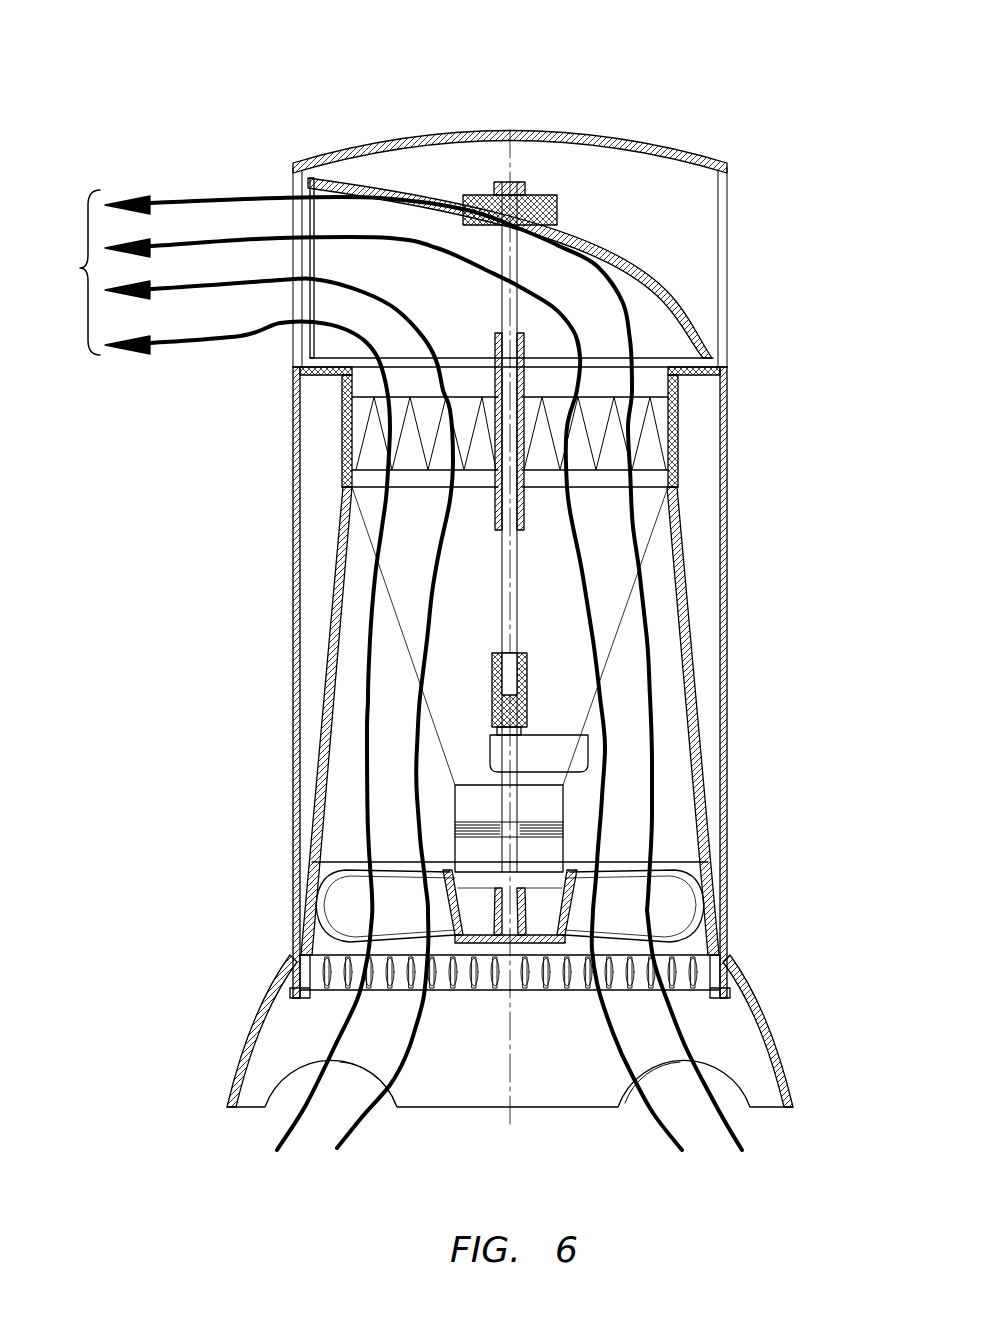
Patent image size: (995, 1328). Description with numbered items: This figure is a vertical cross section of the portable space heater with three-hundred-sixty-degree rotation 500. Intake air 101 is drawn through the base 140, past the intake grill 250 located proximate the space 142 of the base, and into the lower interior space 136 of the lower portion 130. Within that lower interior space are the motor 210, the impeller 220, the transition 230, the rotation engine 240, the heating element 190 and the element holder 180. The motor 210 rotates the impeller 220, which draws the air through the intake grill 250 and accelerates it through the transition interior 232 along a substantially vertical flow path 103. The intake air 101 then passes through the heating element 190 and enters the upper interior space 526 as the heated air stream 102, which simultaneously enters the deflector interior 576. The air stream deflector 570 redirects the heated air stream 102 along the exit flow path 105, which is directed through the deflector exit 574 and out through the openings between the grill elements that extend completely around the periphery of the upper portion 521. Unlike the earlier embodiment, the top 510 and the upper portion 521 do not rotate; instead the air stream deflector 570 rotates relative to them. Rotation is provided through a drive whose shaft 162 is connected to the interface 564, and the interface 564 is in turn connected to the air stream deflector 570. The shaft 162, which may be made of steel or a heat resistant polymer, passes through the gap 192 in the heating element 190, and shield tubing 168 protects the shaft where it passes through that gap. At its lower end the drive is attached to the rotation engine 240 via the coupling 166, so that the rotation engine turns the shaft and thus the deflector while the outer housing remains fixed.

The portable space heater with 360° rotation 500 is at (190, 68).
The deflector exit 574 is at (312, 218).
The exit flow path 105 is at (395, 238).
The top 510 is at (637, 142).
The interface 564 is at (557, 200).
The upper interior space 526 is at (685, 248).
The air stream deflector 570 is at (672, 290).
The deflector interior 576 is at (655, 328).
The upper portion 521 is at (728, 320).
The heated air stream 102 is at (85, 272).
The element holder 180 is at (705, 378).
The gap 192 is at (490, 430).
The heating element 190 is at (650, 478).
The shield tubing 168 is at (490, 518).
The lower interior space 136 is at (700, 538).
The lower portion 130 is at (727, 568).
The shaft 162 is at (490, 590).
The transition 230 is at (693, 641).
The substantially vertical flow path 103 is at (365, 732).
The coupling 166 is at (527, 685).
The rotation engine 240 is at (588, 745).
The transition interior 232 is at (345, 797).
The motor 210 is at (565, 808).
The impeller 220 is at (700, 870).
The base 140 is at (267, 1005).
The intake grill 250 is at (682, 993).
The space 142 is at (300, 1032).
The intake air 101 is at (290, 1128).